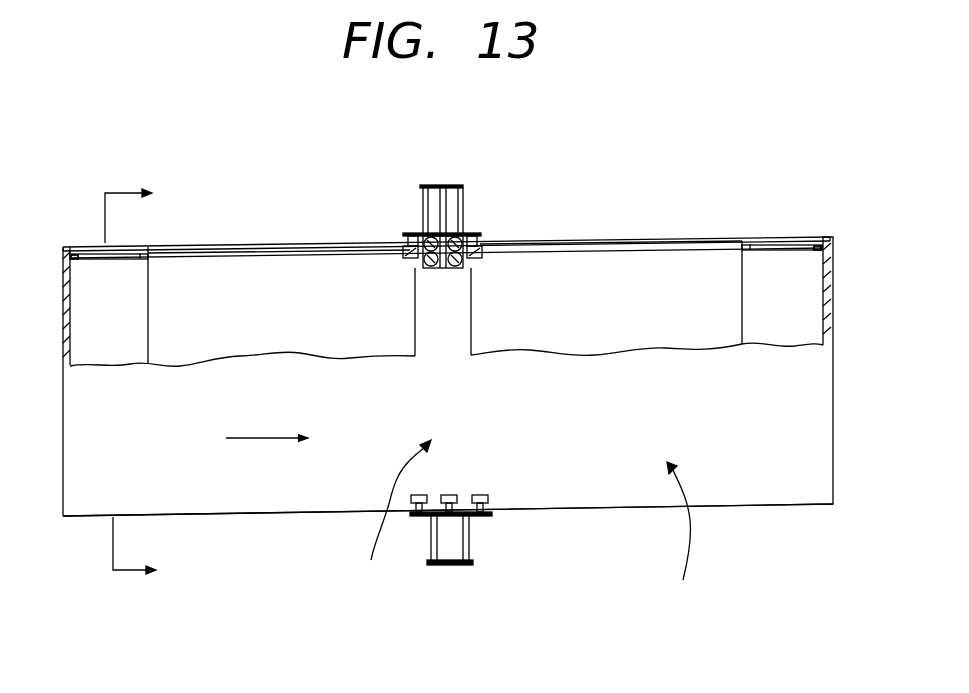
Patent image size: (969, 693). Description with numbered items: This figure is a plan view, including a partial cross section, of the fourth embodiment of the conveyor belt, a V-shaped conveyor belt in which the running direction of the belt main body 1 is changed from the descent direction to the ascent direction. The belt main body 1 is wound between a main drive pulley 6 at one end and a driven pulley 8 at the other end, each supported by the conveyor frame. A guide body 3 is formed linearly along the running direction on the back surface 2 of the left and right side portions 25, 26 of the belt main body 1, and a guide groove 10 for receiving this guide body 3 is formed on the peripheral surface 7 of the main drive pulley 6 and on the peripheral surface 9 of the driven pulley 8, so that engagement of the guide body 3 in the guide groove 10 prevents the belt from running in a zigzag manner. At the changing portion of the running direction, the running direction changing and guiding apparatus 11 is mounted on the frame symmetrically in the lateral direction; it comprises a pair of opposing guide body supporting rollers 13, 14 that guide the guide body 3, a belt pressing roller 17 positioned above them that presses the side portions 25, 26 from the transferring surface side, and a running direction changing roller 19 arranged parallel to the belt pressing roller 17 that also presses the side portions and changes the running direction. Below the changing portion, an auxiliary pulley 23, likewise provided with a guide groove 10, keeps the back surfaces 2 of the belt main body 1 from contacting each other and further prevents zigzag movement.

The belt main body 1 is at (596, 463).
The back surface 2 is at (648, 272).
The guide body 3 is at (250, 260).
The main drive pulley 6 is at (83, 272).
The peripheral surface 7 is at (150, 306).
The driven pulley 8 is at (796, 268).
The peripheral surface 9 is at (741, 281).
The guide groove 10 is at (108, 262).
The running direction changing and guiding apparatus 11 is at (480, 180).
The guide body supporting roller 13 is at (430, 270).
The guide body supporting roller 14 is at (422, 238).
The belt pressing roller 17 is at (441, 238).
The running direction changing roller 19 is at (410, 262).
The auxiliary pulley 23 is at (458, 335).
The left side portion 25 is at (275, 247).
The right side portion 26 is at (300, 508).